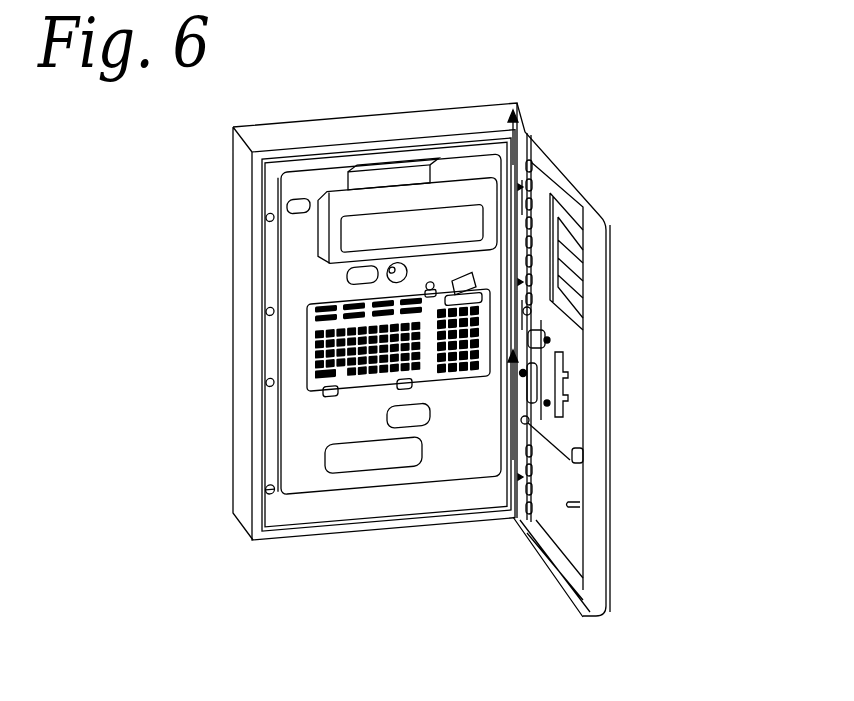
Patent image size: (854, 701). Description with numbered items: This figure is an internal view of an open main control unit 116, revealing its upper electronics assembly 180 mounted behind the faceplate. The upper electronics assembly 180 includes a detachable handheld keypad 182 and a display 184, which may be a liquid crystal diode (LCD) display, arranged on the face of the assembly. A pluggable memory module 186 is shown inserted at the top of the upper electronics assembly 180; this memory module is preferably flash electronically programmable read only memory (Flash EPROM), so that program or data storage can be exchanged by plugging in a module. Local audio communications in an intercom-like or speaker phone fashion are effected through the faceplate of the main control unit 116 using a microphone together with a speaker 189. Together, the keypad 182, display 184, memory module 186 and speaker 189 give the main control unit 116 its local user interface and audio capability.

The main control unit 116 is at (401, 533).
The upper electronics assembly 180 is at (290, 460).
The detachable handheld keypad 182 is at (308, 392).
The display 184 is at (398, 223).
The pluggable memory module 186 is at (403, 168).
The speaker 189 is at (575, 558).